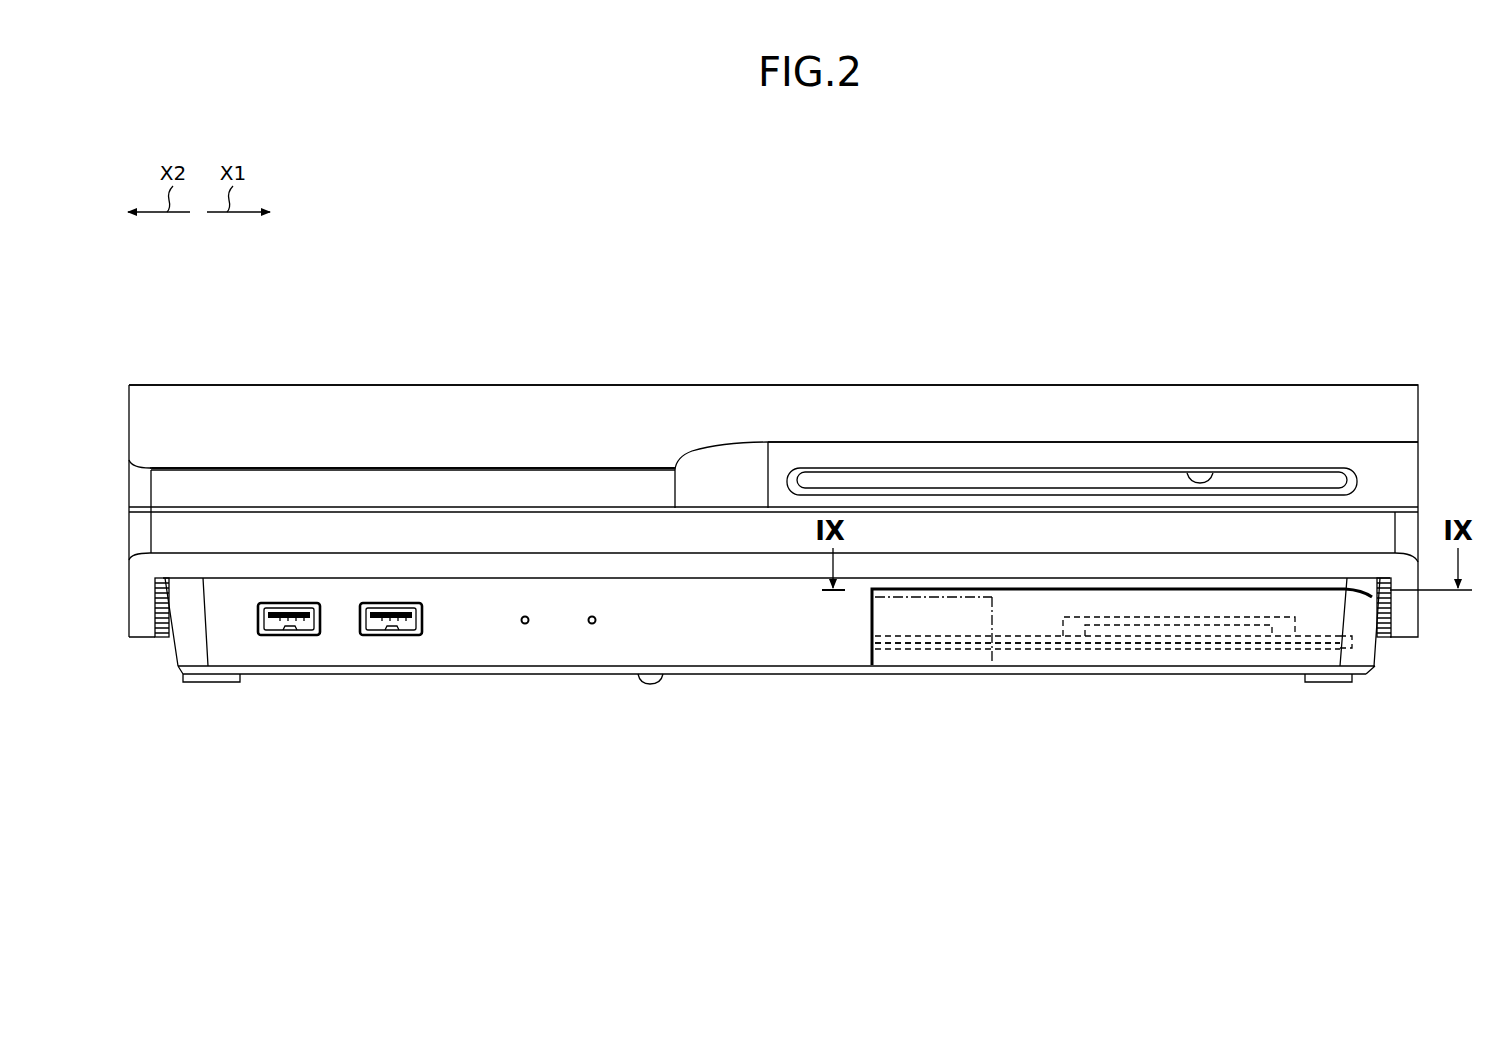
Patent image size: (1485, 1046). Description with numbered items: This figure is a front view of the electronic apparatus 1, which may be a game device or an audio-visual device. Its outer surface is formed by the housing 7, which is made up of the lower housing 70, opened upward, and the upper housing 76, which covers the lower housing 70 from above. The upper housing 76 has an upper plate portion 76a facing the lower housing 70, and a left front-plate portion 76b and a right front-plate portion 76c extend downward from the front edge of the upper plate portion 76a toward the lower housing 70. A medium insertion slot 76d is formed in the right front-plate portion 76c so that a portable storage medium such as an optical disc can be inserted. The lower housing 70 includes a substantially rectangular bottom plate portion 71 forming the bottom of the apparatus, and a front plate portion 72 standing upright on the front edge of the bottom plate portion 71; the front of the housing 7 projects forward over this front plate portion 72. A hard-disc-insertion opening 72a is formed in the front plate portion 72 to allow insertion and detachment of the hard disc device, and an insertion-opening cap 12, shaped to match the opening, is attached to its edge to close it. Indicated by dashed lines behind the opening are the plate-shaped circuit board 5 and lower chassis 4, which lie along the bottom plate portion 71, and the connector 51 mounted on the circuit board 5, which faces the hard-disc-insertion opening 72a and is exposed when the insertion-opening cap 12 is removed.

The electronic apparatus 1 is at (833, 350).
The housing 7 is at (664, 302).
The lower housing 70 is at (561, 498).
The upper housing 76 is at (640, 380).
The upper plate portion 76a is at (1005, 383).
The left front-plate portion 76b is at (453, 492).
The right front-plate portion 76c is at (1149, 463).
The medium insertion slot 76d is at (1216, 478).
The bottom plate portion 71 is at (662, 674).
The front plate portion 72 is at (810, 647).
The hard-disc-insertion opening 72a is at (872, 620).
The circuit board 5 is at (1042, 634).
The lower chassis 4 is at (1048, 649).
The insertion-opening cap 12 is at (1157, 657).
The connector 51 is at (1235, 630).